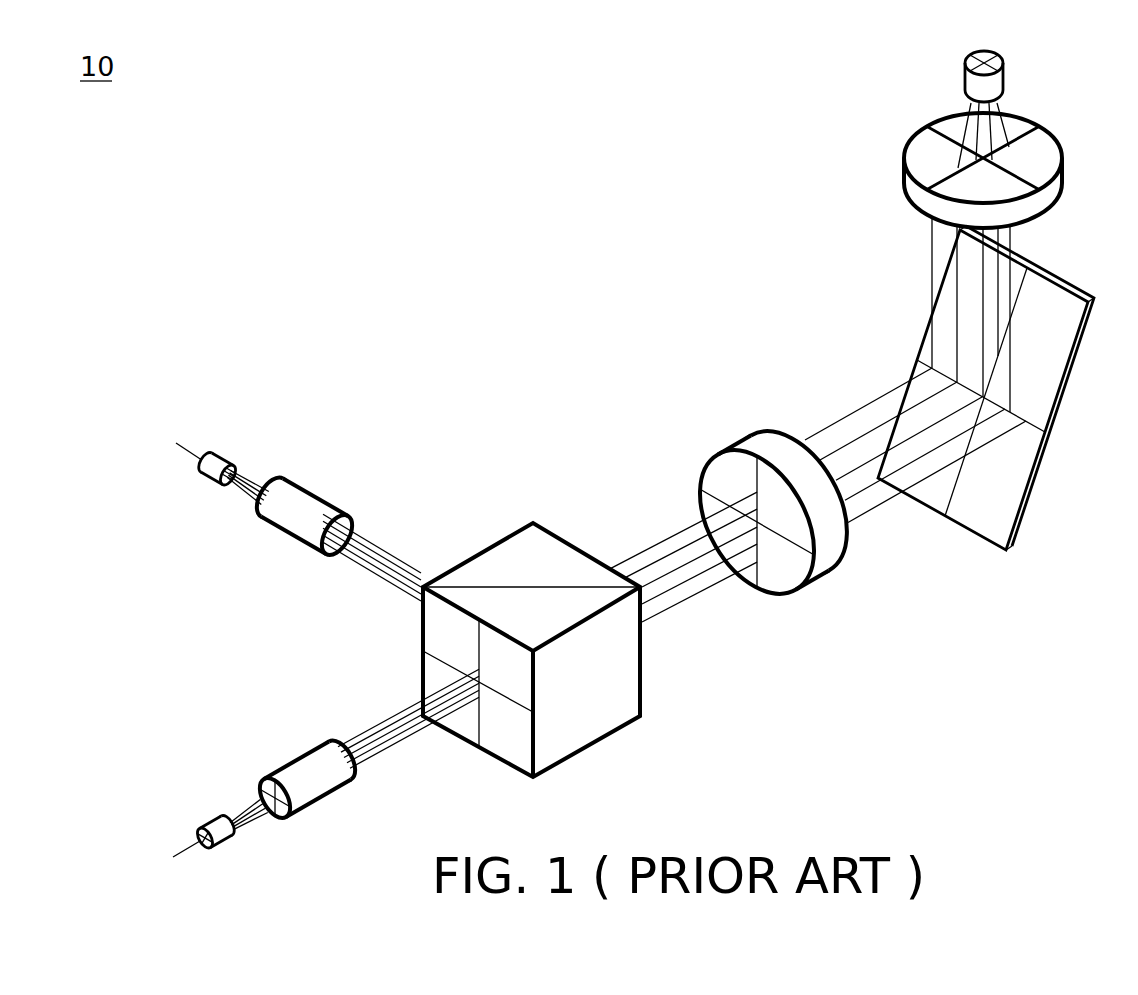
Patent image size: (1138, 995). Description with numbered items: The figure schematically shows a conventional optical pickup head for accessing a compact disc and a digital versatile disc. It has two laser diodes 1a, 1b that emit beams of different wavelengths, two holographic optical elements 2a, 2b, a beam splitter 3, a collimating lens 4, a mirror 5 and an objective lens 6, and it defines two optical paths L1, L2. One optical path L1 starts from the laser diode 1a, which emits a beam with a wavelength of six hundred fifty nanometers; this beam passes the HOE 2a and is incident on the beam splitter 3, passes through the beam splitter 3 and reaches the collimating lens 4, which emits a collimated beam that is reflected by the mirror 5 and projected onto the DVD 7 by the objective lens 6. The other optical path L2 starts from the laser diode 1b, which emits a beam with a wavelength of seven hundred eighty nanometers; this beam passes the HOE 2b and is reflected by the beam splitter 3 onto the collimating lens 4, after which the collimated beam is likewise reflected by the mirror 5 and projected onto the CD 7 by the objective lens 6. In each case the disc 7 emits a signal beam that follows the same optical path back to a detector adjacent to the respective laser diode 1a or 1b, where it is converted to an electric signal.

The laser diode 1a is at (209, 820).
The laser diode 1b is at (222, 454).
The holographic optical element 2a is at (292, 757).
The holographic optical element 2b is at (303, 501).
The beam splitter 3 is at (556, 548).
The collimating lens 4 is at (736, 446).
The mirror 5 is at (1073, 289).
The objective lens 6 is at (921, 153).
The DVD / CD 7 is at (972, 57).
The optical path L1 is at (398, 708).
The optical path L2 is at (384, 544).